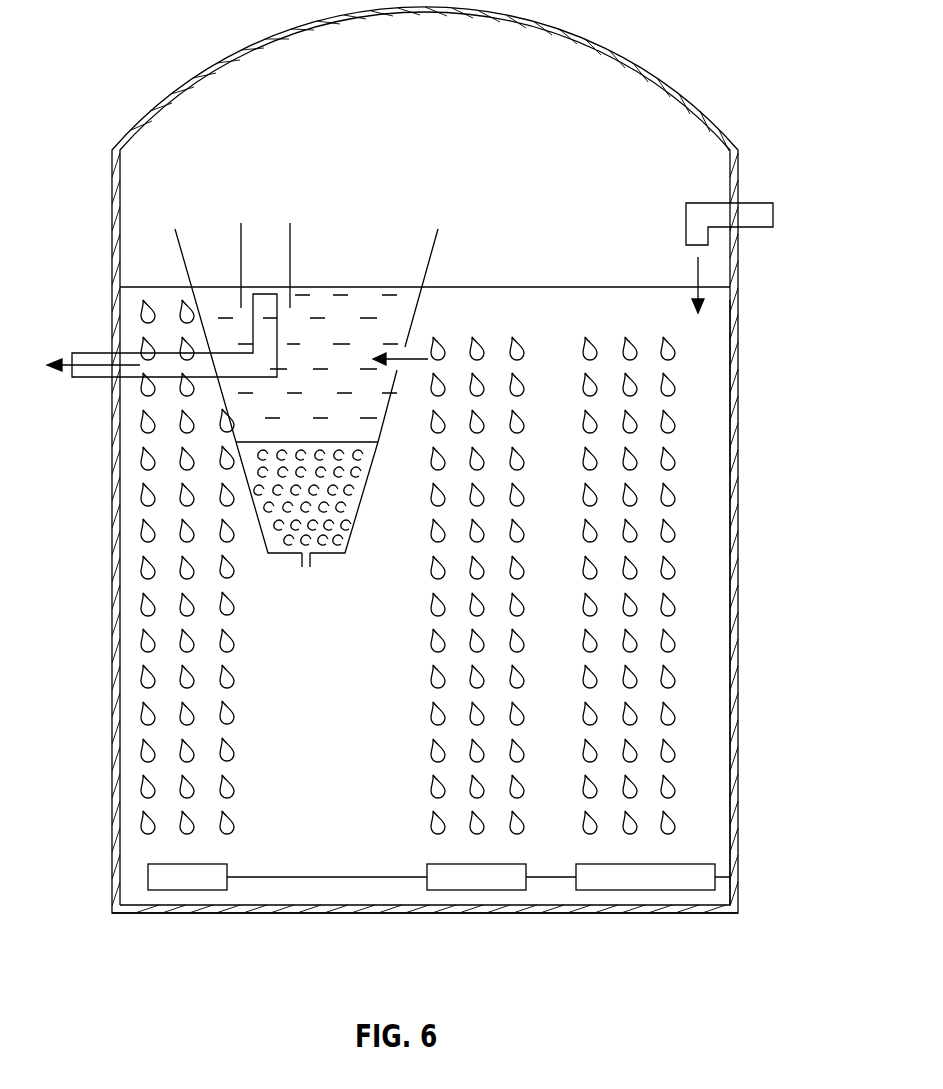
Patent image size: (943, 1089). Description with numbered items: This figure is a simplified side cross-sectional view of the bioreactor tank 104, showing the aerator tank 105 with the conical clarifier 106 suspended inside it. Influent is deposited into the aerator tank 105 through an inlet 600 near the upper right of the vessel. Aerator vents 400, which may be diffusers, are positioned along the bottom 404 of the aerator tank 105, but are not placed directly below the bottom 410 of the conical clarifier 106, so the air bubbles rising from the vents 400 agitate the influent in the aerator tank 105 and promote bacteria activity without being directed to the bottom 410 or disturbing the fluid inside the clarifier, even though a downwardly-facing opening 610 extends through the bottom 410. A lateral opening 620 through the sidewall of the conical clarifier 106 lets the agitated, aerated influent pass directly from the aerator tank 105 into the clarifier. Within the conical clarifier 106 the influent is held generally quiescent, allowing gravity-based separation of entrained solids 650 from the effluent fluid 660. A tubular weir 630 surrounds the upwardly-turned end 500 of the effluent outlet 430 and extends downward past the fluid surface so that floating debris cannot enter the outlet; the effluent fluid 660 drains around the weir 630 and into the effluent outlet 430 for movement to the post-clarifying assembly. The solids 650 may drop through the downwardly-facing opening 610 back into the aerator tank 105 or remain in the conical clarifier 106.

The bioreactor tank 104 is at (633, 63).
The aerator tank 105 is at (750, 685).
The conical clarifier 106 is at (188, 278).
The aerator vents 400 is at (472, 892).
The bottom of the aerator tank 404 is at (618, 913).
The bottom of the conical clarifier 410 is at (335, 555).
The effluent outlet 430 is at (268, 293).
The upwardly-turned end 500 is at (278, 335).
The inlet 600 is at (686, 224).
The downwardly-facing opening 610 is at (304, 567).
The lateral opening 620 is at (397, 372).
The weir 630 is at (240, 250).
The solids 650 is at (350, 497).
The effluent fluid 660 is at (357, 325).